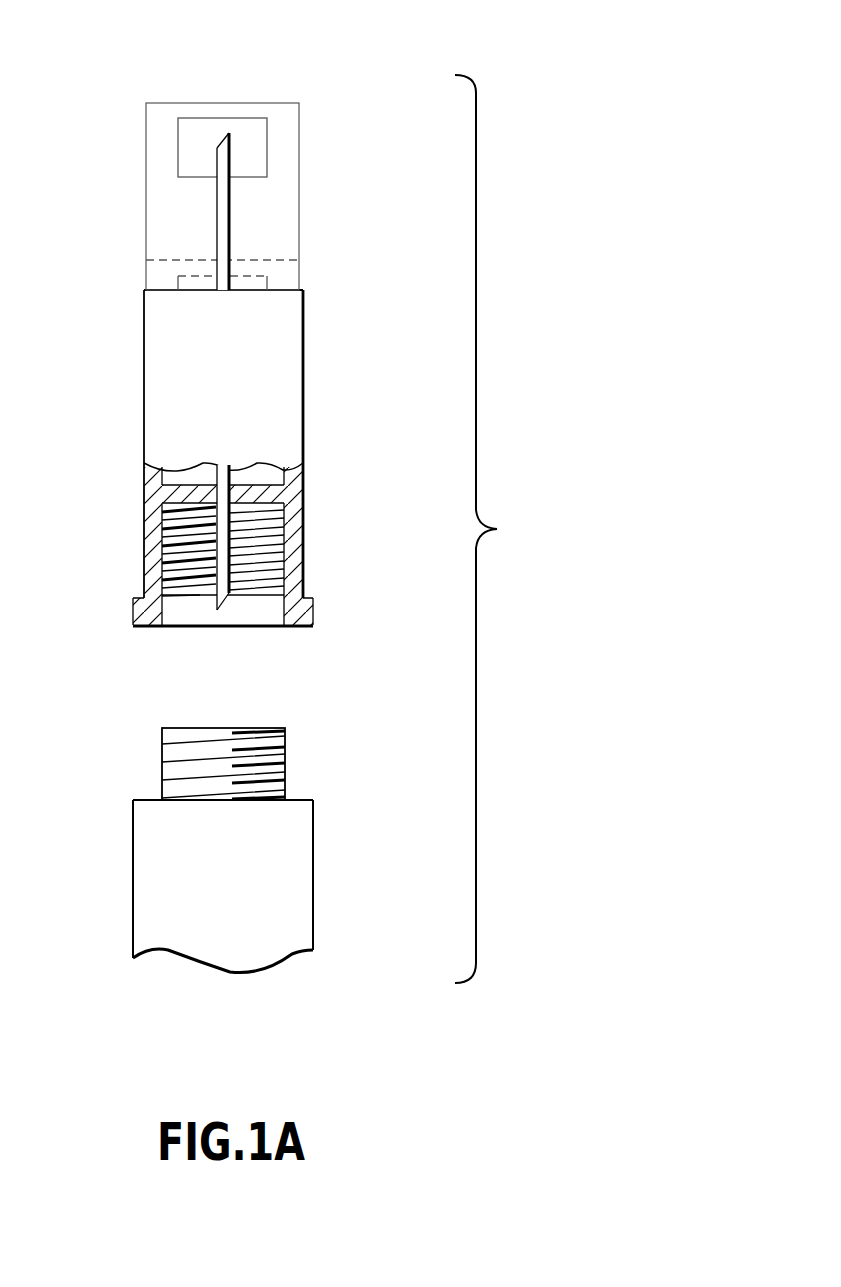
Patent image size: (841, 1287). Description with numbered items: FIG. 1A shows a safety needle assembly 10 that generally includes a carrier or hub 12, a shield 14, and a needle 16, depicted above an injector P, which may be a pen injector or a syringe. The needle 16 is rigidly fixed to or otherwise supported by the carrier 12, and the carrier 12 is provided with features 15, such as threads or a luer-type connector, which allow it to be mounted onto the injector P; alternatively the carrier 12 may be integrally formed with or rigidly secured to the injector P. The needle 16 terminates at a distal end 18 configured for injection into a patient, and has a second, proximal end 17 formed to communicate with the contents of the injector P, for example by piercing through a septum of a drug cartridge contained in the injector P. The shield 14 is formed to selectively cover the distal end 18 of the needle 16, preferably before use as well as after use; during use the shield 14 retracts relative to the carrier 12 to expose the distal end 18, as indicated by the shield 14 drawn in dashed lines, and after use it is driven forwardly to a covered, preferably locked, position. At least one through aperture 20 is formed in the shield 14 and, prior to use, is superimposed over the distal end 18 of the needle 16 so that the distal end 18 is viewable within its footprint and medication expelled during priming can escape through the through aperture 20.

The safety needle assembly 10 is at (124, 314).
The carrier or hub 12 is at (303, 386).
The shield 14 is at (299, 160).
The features 15 is at (258, 535).
The needle 16 is at (217, 200).
The proximal end 17 is at (226, 600).
The distal end 18 is at (222, 138).
The through aperture 20 is at (248, 133).
The injector P is at (313, 837).